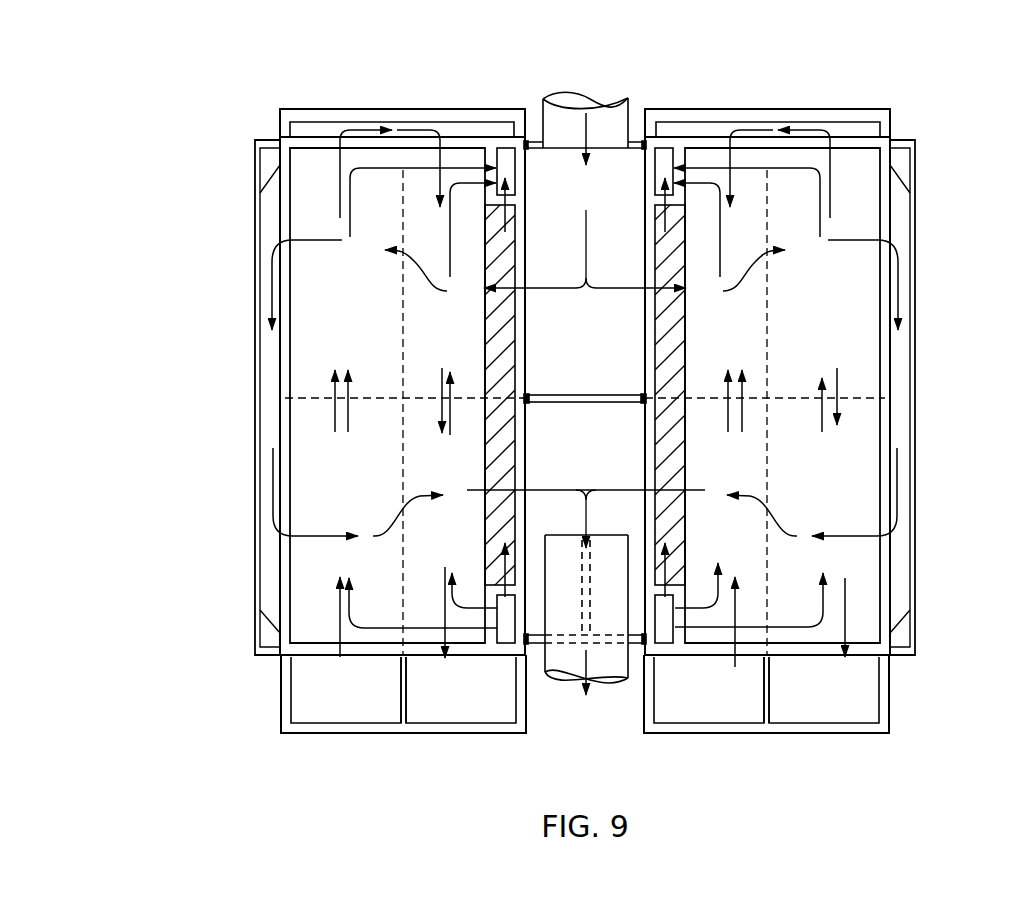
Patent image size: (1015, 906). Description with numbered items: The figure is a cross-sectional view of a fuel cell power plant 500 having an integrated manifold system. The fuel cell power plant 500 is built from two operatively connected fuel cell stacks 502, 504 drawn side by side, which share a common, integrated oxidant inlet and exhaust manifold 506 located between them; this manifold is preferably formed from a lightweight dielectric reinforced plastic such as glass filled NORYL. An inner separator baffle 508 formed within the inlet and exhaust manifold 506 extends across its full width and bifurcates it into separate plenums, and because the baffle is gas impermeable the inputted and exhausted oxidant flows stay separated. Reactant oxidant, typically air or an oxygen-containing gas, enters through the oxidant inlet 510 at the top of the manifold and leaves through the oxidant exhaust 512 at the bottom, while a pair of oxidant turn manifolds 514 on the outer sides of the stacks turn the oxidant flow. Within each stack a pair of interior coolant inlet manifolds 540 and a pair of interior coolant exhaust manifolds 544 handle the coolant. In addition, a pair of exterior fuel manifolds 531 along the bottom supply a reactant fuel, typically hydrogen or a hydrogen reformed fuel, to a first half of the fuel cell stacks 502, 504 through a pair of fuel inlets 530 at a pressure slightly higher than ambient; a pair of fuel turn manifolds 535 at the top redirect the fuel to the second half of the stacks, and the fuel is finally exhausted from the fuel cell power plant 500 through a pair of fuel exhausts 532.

The fuel cell power plant 500 is at (252, 85).
The fuel cell stack 502 is at (400, 93).
The fuel cell stack 504 is at (823, 90).
The integrated oxidant inlet and exhaust manifold 506 is at (638, 125).
The inner separator baffle 508 is at (594, 390).
The oxidant inlet 510 is at (603, 86).
The oxidant exhaust 512 is at (616, 698).
The oxidant turn manifold 514 is at (240, 220).
The fuel inlet 530 is at (352, 703).
The exterior fuel manifold 531 is at (405, 740).
The fuel exhaust 532 is at (467, 706).
The fuel turn manifold 535 is at (330, 100).
The interior coolant inlet manifold 540 is at (507, 638).
The interior coolant exhaust manifold 544 is at (506, 153).